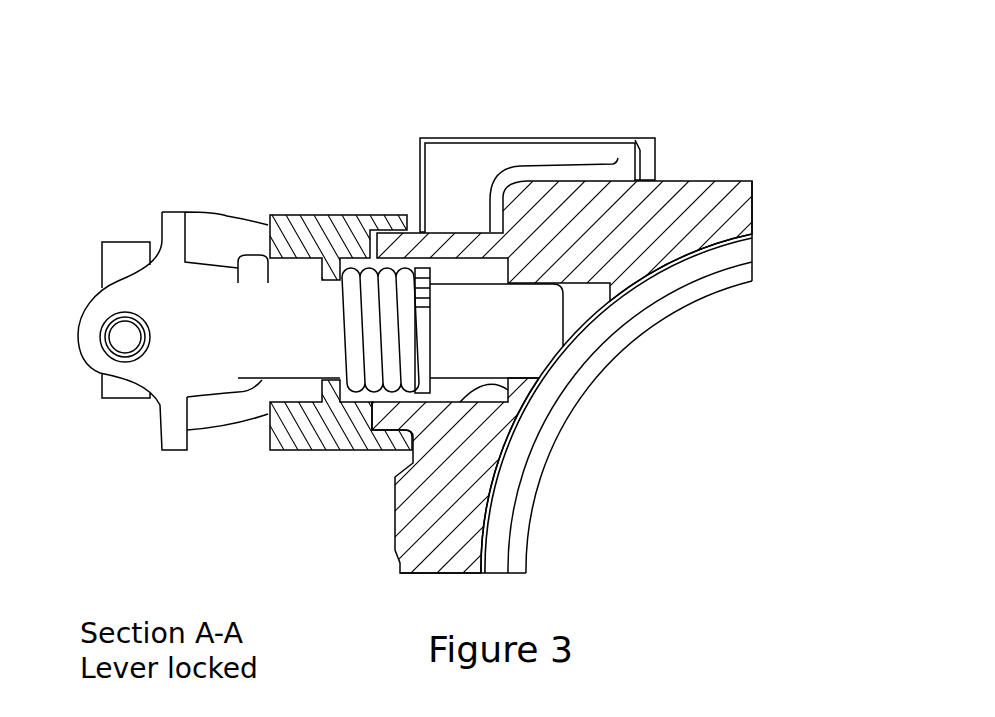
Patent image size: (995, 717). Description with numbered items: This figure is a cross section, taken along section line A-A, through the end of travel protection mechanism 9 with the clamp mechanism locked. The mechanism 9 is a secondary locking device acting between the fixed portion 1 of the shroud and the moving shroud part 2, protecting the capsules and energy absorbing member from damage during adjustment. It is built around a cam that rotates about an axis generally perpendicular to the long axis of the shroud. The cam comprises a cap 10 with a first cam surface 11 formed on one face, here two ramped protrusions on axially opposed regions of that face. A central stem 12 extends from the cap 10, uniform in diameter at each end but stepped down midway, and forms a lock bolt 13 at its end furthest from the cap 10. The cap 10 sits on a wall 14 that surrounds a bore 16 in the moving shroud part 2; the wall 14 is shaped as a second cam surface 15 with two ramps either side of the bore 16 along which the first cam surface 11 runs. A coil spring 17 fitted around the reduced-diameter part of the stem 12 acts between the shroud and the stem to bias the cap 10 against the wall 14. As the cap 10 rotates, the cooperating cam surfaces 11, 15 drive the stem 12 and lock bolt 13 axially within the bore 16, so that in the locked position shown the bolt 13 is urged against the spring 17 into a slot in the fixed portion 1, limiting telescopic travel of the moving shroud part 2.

The fixed portion of the shroud 1 is at (690, 292).
The moving shroud part 2 is at (547, 197).
The end of travel protection mechanism 9 is at (222, 172).
The cap 10 is at (173, 230).
The first cam surface 11 is at (268, 235).
The central stem 12 is at (288, 302).
The lock bolt 13 is at (565, 348).
The wall 14 is at (305, 452).
The second cam surface 15 is at (268, 438).
The bore 16 is at (537, 430).
The spring 17 is at (377, 386).